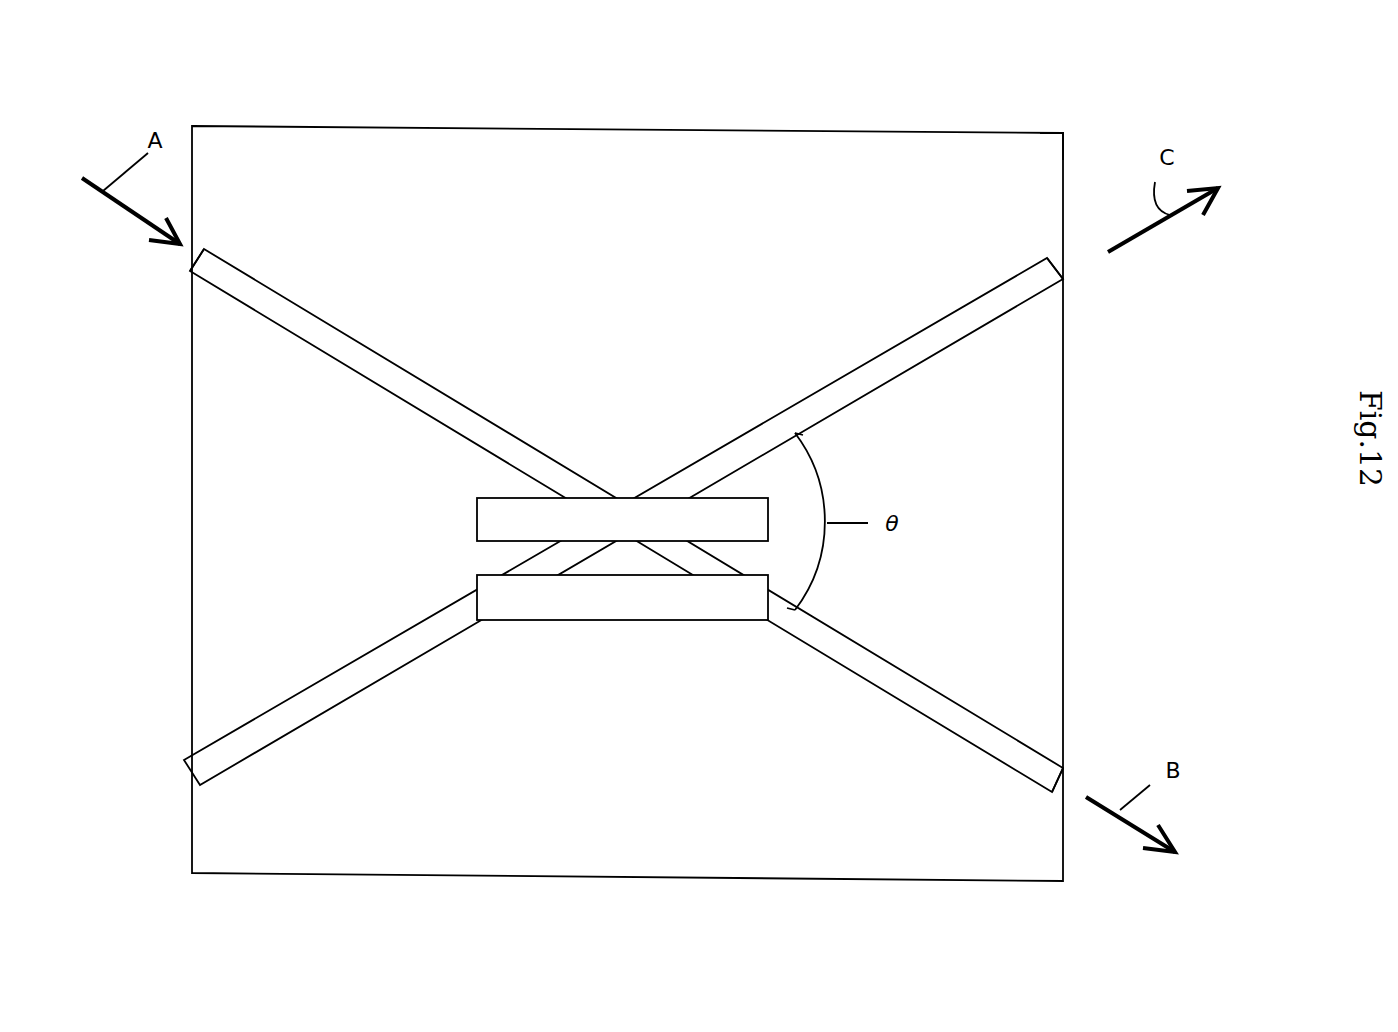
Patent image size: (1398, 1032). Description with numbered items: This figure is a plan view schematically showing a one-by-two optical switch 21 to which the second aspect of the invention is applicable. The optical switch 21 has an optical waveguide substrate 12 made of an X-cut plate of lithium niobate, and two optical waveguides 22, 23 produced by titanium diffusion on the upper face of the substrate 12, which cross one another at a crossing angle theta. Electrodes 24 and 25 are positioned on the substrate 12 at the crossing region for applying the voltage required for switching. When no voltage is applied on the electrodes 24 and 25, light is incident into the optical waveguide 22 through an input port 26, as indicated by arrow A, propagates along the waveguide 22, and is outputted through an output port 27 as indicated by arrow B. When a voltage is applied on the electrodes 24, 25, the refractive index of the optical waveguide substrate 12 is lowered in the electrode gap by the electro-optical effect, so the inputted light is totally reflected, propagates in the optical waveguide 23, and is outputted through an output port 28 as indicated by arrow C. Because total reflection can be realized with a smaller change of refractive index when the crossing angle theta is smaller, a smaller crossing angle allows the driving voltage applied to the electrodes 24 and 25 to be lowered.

The optical waveguide substrate 12 is at (658, 150).
The optical switch 21 is at (1064, 119).
The optical waveguide 22 is at (284, 311).
The optical waveguide 23 is at (362, 673).
The electrode 24 is at (573, 535).
The electrode 25 is at (630, 598).
The input port 26 is at (192, 268).
The output port 27 is at (1067, 773).
The output port 28 is at (1063, 270).